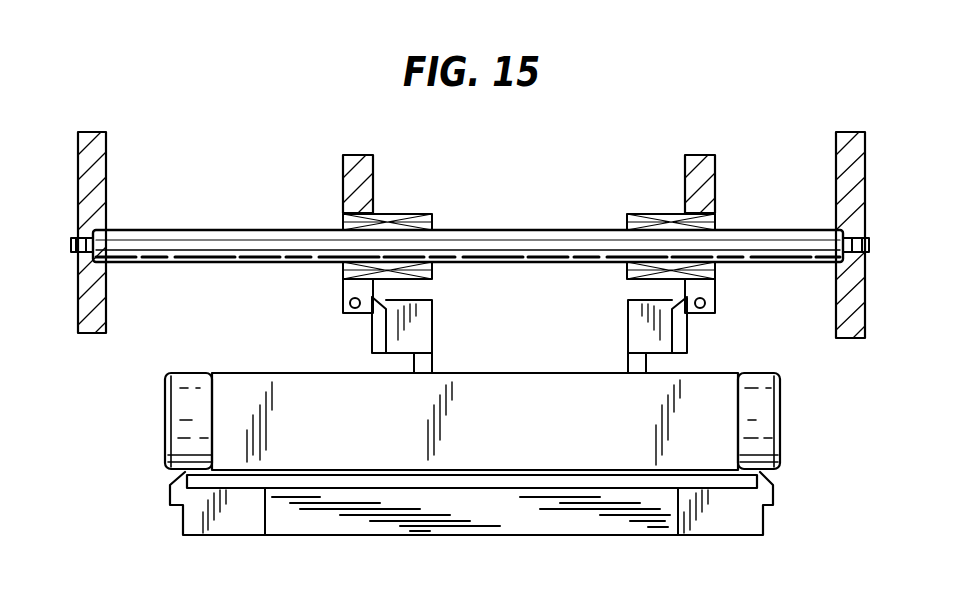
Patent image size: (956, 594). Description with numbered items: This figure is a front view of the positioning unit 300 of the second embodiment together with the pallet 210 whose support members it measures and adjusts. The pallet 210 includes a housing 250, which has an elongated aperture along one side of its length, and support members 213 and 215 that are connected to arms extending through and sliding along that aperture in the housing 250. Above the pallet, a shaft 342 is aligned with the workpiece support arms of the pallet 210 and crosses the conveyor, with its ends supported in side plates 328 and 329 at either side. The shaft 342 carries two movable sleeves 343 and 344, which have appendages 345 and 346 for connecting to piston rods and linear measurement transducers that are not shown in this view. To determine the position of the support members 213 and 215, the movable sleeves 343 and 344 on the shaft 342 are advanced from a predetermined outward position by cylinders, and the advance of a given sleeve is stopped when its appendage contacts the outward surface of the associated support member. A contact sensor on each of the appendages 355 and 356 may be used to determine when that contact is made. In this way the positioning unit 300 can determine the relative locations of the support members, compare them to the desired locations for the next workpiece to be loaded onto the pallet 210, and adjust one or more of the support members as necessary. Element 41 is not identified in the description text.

The positioning unit 300 is at (870, 150).
The side plate 328 is at (80, 193).
The side plate 329 is at (845, 181).
The shaft 342 is at (250, 241).
The movable sleeve 343 is at (665, 215).
The movable sleeve 344 is at (405, 230).
The appendage 345 is at (376, 163).
The appendage 346 is at (706, 158).
The appendage 355 is at (350, 303).
The appendage 356 is at (708, 303).
The support member 213 is at (378, 343).
The support member 215 is at (692, 343).
The housing 250 is at (176, 406).
The pallet 210 is at (238, 520).
The plate 41 is at (485, 532).